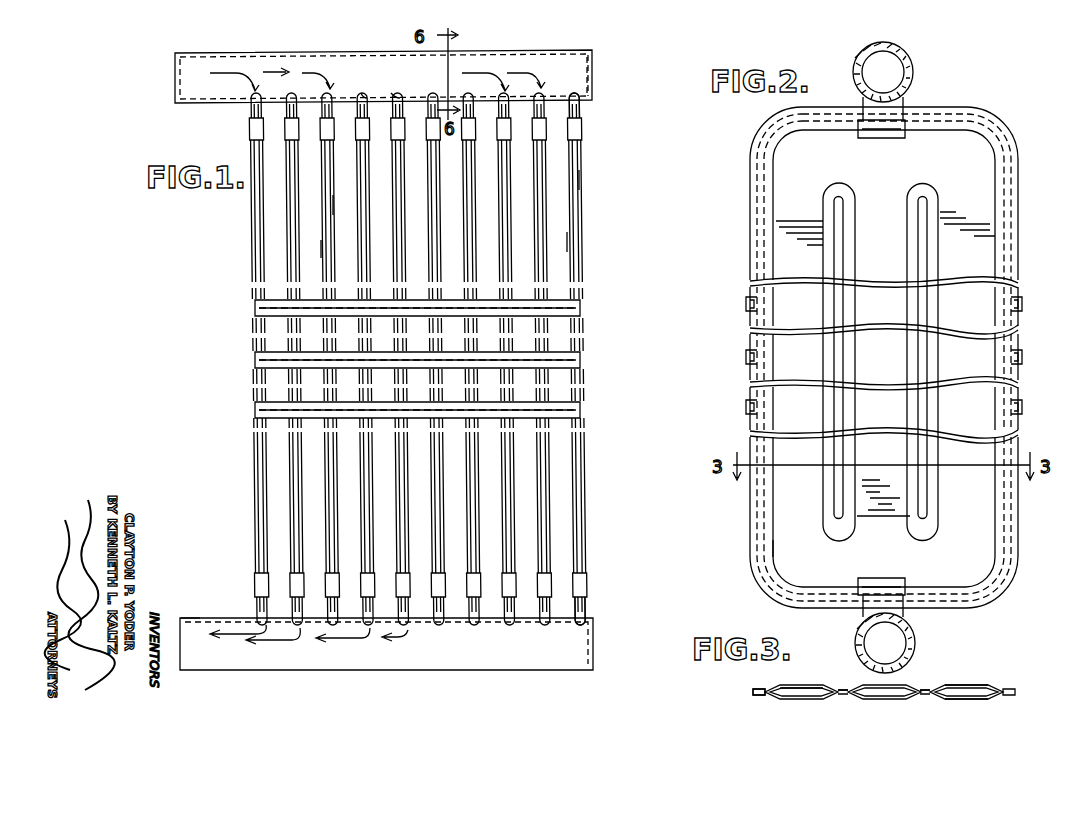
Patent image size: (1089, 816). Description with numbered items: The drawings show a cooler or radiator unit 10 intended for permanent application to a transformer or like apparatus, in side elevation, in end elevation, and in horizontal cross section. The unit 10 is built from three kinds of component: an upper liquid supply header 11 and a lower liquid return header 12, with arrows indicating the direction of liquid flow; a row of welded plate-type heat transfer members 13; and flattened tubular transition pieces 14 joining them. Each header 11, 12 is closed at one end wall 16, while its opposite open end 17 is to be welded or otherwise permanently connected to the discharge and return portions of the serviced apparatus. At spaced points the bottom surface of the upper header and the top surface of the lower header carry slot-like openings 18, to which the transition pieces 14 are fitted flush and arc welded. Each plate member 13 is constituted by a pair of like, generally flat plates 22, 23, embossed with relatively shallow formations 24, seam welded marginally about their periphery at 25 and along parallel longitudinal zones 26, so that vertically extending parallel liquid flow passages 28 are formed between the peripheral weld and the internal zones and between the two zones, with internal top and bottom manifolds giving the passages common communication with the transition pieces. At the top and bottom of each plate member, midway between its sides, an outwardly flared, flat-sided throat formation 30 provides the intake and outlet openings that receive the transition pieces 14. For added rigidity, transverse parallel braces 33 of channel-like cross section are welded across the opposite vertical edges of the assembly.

In FIG. 1, the cooler or radiator unit 10 is at (410, 384).
In FIG. 2, the cooler or radiator unit 10 is at (883, 357).
In FIG. 1, the upper liquid supply header 11 is at (565, 77).
In FIG. 2, the upper liquid supply header 11 is at (913, 73).
In FIG. 1, the lower liquid return header 12 is at (455, 660).
In FIG. 2, the lower liquid return header 12 is at (912, 640).
In FIG. 1, the plate-type heat transfer member 13 is at (255, 238).
In FIG. 2, the plate-type heat transfer member 13 is at (985, 545).
In FIG. 1, the transition piece 14 is at (591, 118).
In FIG. 2, the transition piece 14 is at (900, 112).
In FIG. 1, the end wall 16 is at (595, 80).
In FIG. 1, the open end 17 is at (193, 616).
In FIG. 1, the slot-like opening 18 is at (398, 96).
In FIG. 1, the plate 22 is at (322, 248).
In FIG. 2, the plate 22 is at (800, 548).
In FIG. 3, the plate 22 is at (974, 684).
In FIG. 1, the plate 23 is at (336, 208).
In FIG. 3, the plate 23 is at (960, 701).
In FIG. 3, the shallow formation 24 is at (904, 686).
In FIG. 2, the marginal seam weld 25 is at (773, 201).
In FIG. 3, the marginal seam weld 25 is at (762, 688).
In FIG. 2, the longitudinal seam weld zone 26 is at (924, 208).
In FIG. 3, the longitudinal seam weld zone 26 is at (843, 689).
In FIG. 3, the liquid flow passage 28 is at (797, 685).
In FIG. 2, the throat formation 30 is at (882, 131).
In FIG. 1, the transverse brace 33 is at (448, 299).
In FIG. 2, the transverse brace 33 is at (745, 400).